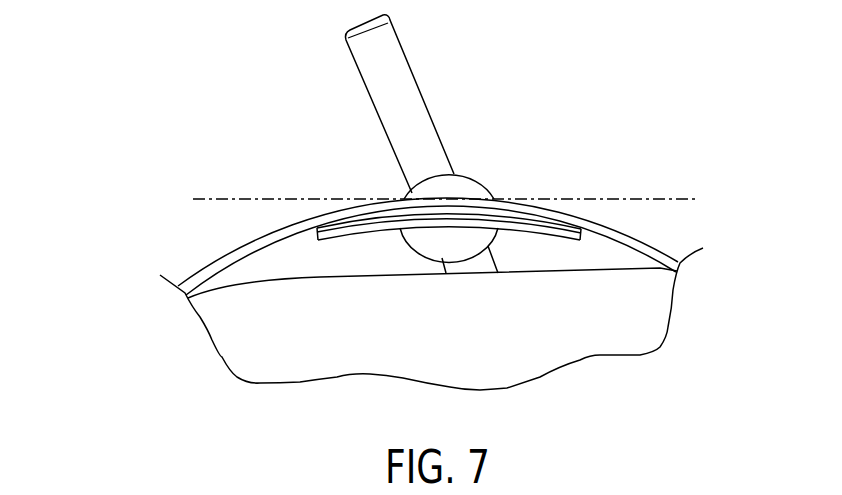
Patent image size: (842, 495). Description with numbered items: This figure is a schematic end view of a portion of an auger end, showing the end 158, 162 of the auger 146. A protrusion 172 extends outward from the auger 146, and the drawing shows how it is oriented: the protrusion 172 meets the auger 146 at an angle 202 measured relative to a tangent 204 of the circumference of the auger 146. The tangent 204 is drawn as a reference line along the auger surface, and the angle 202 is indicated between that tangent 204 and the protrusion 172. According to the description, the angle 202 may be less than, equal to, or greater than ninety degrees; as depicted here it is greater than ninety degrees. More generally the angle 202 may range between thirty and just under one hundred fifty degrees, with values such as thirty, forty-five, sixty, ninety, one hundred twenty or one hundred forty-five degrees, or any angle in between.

The auger 146 is at (637, 240).
The end of the auger 158 is at (324, 232).
The end of the auger 162 is at (235, 252).
The protrusion 172 is at (423, 97).
The angle 202 is at (377, 109).
The tangent 204 is at (592, 198).